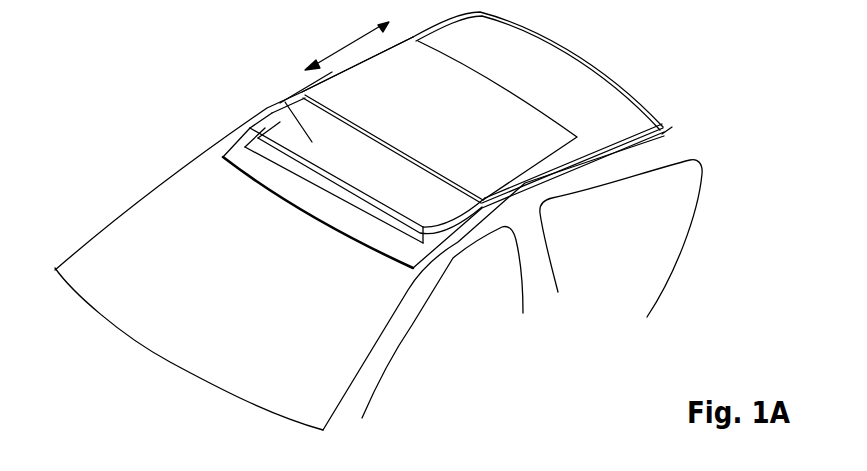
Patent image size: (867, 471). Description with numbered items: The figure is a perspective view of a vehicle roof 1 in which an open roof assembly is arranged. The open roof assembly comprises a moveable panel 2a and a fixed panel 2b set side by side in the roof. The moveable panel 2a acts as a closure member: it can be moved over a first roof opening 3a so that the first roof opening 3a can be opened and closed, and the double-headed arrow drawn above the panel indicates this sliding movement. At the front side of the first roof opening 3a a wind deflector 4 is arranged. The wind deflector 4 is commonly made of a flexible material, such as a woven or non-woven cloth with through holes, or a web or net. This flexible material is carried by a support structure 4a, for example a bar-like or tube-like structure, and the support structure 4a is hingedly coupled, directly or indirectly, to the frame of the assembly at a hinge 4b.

The vehicle roof 1 is at (652, 155).
The moveable panel 2a is at (428, 112).
The fixed panel 2b is at (538, 73).
The first roof opening 3a is at (313, 142).
The wind deflector 4 is at (270, 156).
The support structure 4a is at (392, 213).
The hinge 4b is at (271, 110).